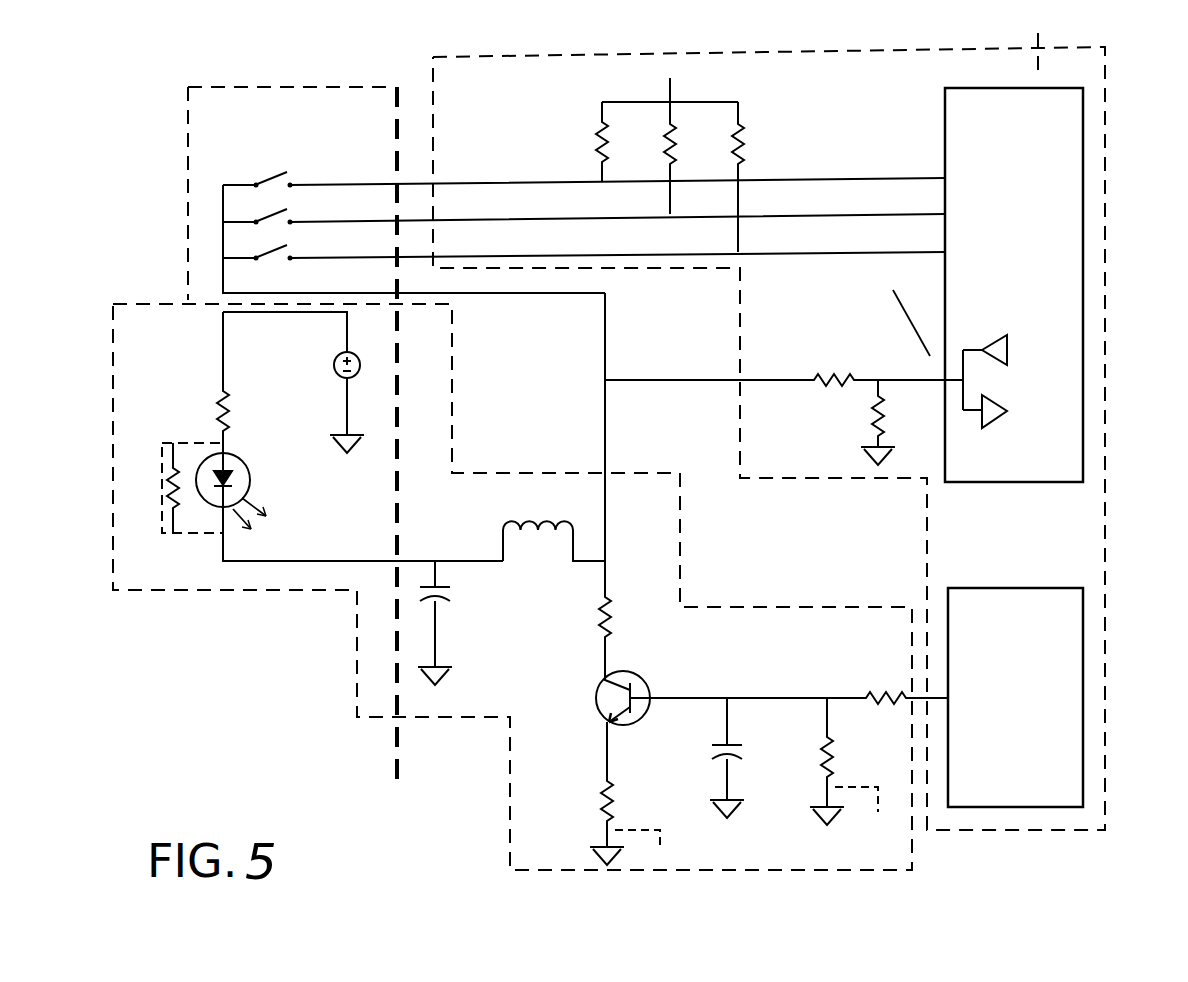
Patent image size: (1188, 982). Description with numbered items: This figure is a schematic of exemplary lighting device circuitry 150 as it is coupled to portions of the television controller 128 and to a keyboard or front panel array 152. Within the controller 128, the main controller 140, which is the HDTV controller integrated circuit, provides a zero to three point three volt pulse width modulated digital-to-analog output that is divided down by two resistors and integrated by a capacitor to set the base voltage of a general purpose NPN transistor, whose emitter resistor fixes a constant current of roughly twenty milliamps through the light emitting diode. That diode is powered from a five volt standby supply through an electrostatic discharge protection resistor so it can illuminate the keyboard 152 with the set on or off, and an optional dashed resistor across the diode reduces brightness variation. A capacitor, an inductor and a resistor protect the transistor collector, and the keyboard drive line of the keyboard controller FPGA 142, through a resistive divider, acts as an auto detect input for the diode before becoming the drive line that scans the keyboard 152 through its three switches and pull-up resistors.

The controller 128 is at (807, 431).
The main controller U1 140 is at (962, 584).
The keyboard controller FPGA U2 142 is at (945, 112).
The lighting device circuitry 150 is at (297, 683).
The keyboard or front panel array (FPA) 152 is at (310, 84).